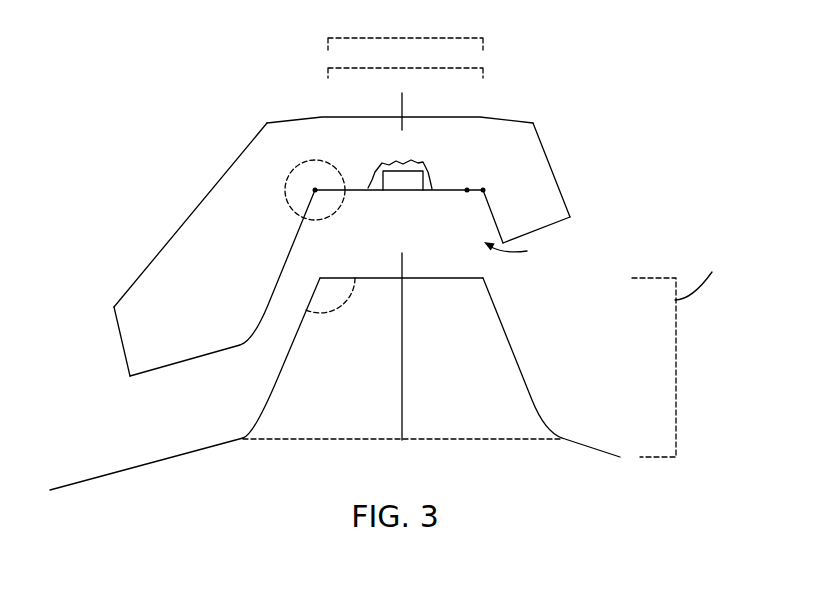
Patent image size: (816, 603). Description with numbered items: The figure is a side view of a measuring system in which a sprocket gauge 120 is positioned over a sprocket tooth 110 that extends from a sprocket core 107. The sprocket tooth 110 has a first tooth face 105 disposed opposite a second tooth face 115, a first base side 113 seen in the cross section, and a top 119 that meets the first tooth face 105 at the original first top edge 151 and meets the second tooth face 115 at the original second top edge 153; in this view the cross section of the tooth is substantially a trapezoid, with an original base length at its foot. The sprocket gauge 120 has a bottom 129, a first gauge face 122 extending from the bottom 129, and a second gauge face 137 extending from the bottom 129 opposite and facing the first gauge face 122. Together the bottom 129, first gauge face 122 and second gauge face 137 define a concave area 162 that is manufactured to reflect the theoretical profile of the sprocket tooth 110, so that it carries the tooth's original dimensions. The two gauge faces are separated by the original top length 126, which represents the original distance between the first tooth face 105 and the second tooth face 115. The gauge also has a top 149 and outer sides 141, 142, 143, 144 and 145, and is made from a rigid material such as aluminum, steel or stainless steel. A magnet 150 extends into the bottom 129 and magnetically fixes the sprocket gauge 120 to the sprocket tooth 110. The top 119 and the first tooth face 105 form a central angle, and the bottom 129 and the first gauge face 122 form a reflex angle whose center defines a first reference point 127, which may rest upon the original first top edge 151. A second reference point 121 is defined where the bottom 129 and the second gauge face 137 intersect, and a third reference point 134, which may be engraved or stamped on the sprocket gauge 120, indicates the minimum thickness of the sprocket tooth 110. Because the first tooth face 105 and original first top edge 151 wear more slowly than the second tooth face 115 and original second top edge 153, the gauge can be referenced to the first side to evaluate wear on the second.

The first tooth face 105 is at (292, 347).
The sprocket core 107 is at (205, 502).
The sprocket tooth 110 is at (567, 383).
The first base side 113 is at (470, 418).
The second tooth face 115 is at (519, 367).
The top 119 is at (395, 280).
The sprocket gauge 120 is at (94, 197).
The second reference point 121 is at (483, 190).
The first gauge face 122 is at (299, 228).
The original top length 126 is at (405, 44).
The first reference point 127 is at (315, 190).
The bottom 129 is at (448, 190).
The third reference point 134 is at (467, 190).
The second gauge face 137 is at (492, 213).
The outer side 141 is at (550, 225).
The outer side 142 is at (544, 150).
The outer side 143 is at (219, 180).
The outer side 144 is at (122, 343).
The outer side 145 is at (147, 371).
The top 149 is at (437, 112).
The magnet 150 is at (392, 178).
The original first top edge 151 is at (320, 277).
The original second top edge 153 is at (484, 279).
The concave area 162 is at (527, 253).